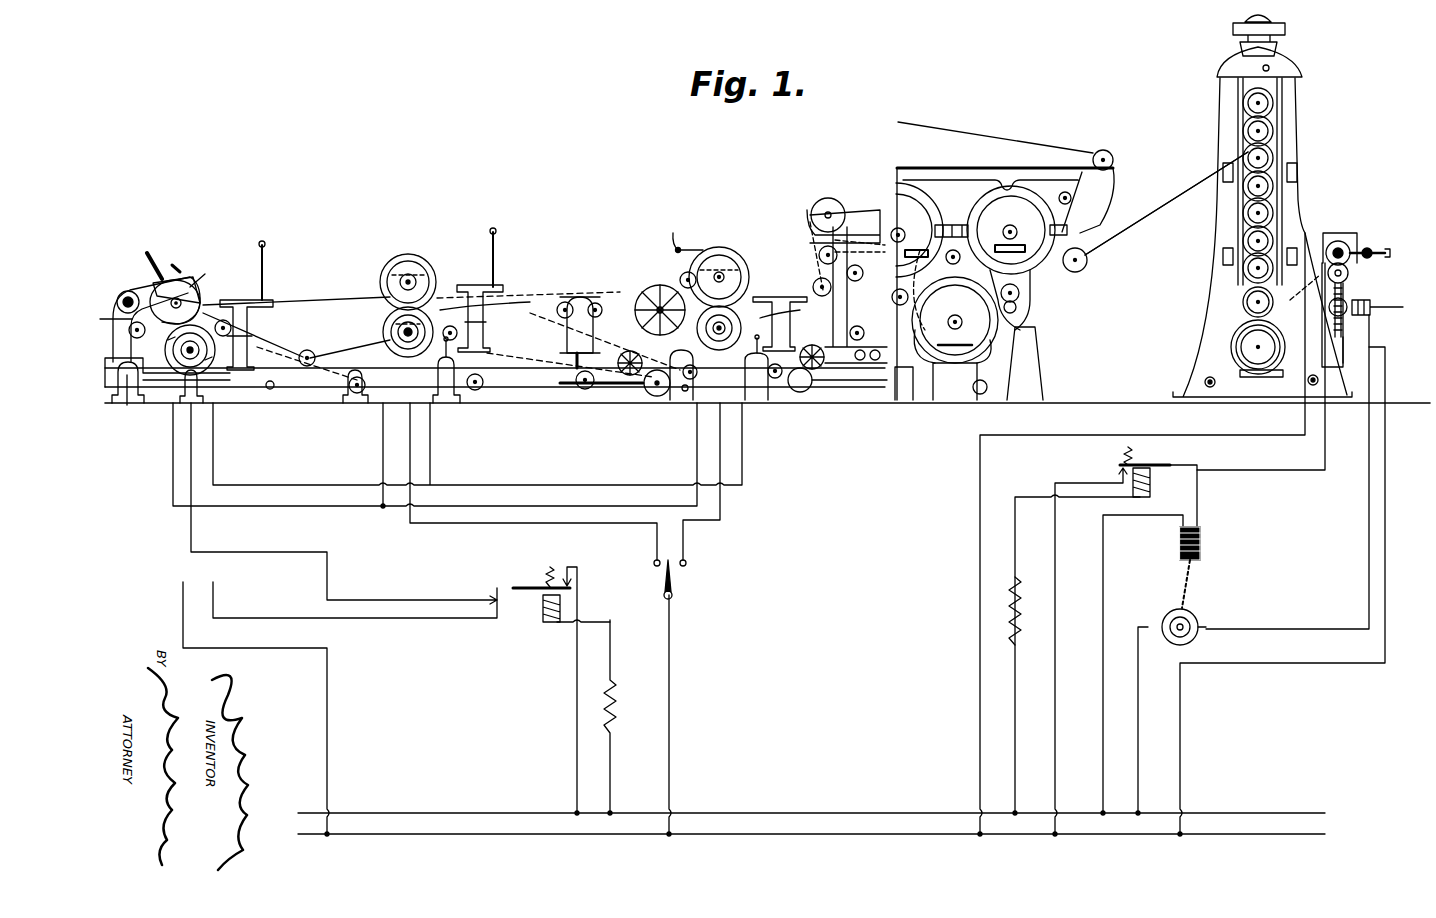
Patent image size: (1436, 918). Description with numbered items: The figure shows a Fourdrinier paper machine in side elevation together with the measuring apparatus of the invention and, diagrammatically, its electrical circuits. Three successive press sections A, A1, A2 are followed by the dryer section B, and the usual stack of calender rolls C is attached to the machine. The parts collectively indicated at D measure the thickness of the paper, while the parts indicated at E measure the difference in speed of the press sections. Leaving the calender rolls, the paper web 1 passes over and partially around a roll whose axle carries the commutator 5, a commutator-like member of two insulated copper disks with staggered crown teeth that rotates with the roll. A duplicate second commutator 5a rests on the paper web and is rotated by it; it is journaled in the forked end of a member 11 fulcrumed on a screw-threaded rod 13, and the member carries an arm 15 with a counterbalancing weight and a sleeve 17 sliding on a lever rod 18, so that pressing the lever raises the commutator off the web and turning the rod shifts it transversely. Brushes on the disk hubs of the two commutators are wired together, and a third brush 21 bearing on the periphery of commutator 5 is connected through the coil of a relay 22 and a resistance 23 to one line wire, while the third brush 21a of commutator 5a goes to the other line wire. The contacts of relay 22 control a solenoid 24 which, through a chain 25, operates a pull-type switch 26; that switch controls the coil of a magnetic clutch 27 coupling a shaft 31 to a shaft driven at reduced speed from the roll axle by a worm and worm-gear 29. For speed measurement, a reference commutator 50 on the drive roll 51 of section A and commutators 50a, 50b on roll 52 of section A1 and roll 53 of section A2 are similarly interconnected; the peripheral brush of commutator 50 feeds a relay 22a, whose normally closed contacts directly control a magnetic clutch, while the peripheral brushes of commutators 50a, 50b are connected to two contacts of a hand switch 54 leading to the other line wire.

The paper web 1 is at (1166, 203).
The commutator 5 is at (1348, 278).
The second commutator 5a is at (1330, 246).
The member 11 is at (1352, 250).
The screw-threaded rod 13 is at (1348, 260).
The arm 15 is at (1369, 248).
The sleeve 17 is at (1391, 253).
The lever rod 18 is at (1385, 250).
The third brush 21 is at (1348, 276).
The third brush 21a is at (1340, 240).
The relay 22 is at (1153, 485).
The relay 22a is at (545, 615).
The resistance 23 is at (1020, 610).
The solenoid 24 is at (1201, 546).
The chain 25 is at (1190, 590).
The pull-type switch 26 is at (1195, 618).
The magnetic clutch 27 is at (1354, 330).
The worm-gear 29 is at (1349, 354).
The shaft 31 is at (1384, 316).
The commutator 50 is at (208, 320).
The commutator 50a is at (447, 292).
The commutator 50b is at (732, 303).
The drive roll 51 is at (190, 287).
The roll 52 is at (485, 314).
The roll 53 is at (790, 325).
The hand switch 54 is at (672, 582).
The press section A is at (236, 312).
The press section A1 is at (383, 218).
The press section A2 is at (761, 299).
The dryer section B is at (1002, 273).
The stack of calender rolls C is at (1227, 117).
The thickness-measuring mechanism and circuits D is at (1343, 276).
The speed-measuring mechanism and circuits E is at (513, 456).